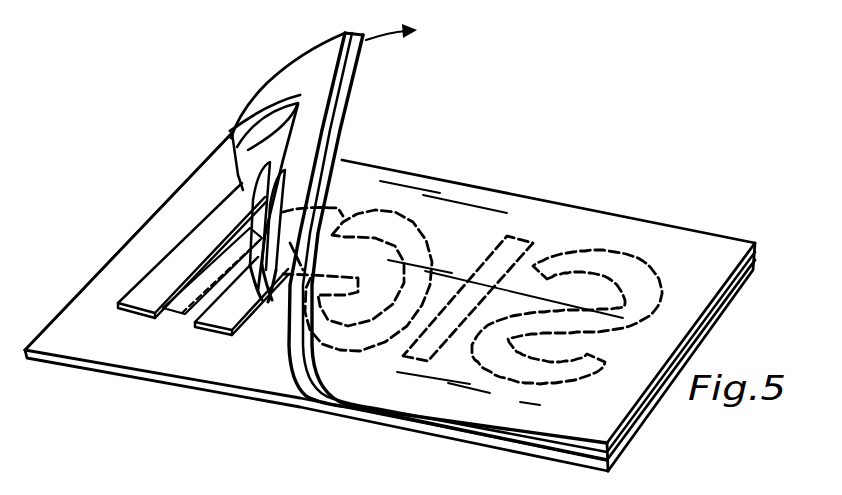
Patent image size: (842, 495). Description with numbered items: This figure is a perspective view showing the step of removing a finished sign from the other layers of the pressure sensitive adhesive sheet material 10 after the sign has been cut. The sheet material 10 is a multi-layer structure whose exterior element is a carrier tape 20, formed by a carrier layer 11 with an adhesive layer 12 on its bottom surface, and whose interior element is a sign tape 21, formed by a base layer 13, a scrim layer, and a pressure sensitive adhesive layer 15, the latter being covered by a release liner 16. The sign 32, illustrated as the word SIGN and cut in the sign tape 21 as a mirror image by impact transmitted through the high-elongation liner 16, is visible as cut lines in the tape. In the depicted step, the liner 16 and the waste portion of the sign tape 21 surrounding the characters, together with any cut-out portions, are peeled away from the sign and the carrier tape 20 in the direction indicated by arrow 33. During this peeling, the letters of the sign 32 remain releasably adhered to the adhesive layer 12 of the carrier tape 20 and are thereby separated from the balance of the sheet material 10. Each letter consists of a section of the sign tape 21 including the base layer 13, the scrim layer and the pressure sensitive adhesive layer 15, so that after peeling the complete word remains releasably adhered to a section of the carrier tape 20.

The pressure sensitive adhesive sheet material 10 is at (150, 385).
The carrier layer 11 is at (54, 362).
The adhesive layer 12 is at (158, 212).
The base layer 13 is at (299, 68).
The pressure sensitive adhesive layer 15 is at (160, 285).
The release liner 16 is at (345, 116).
The carrier tape 20 is at (200, 173).
The sign tape 21 is at (165, 248).
The sign 32 is at (650, 273).
The arrow 33 is at (383, 50).